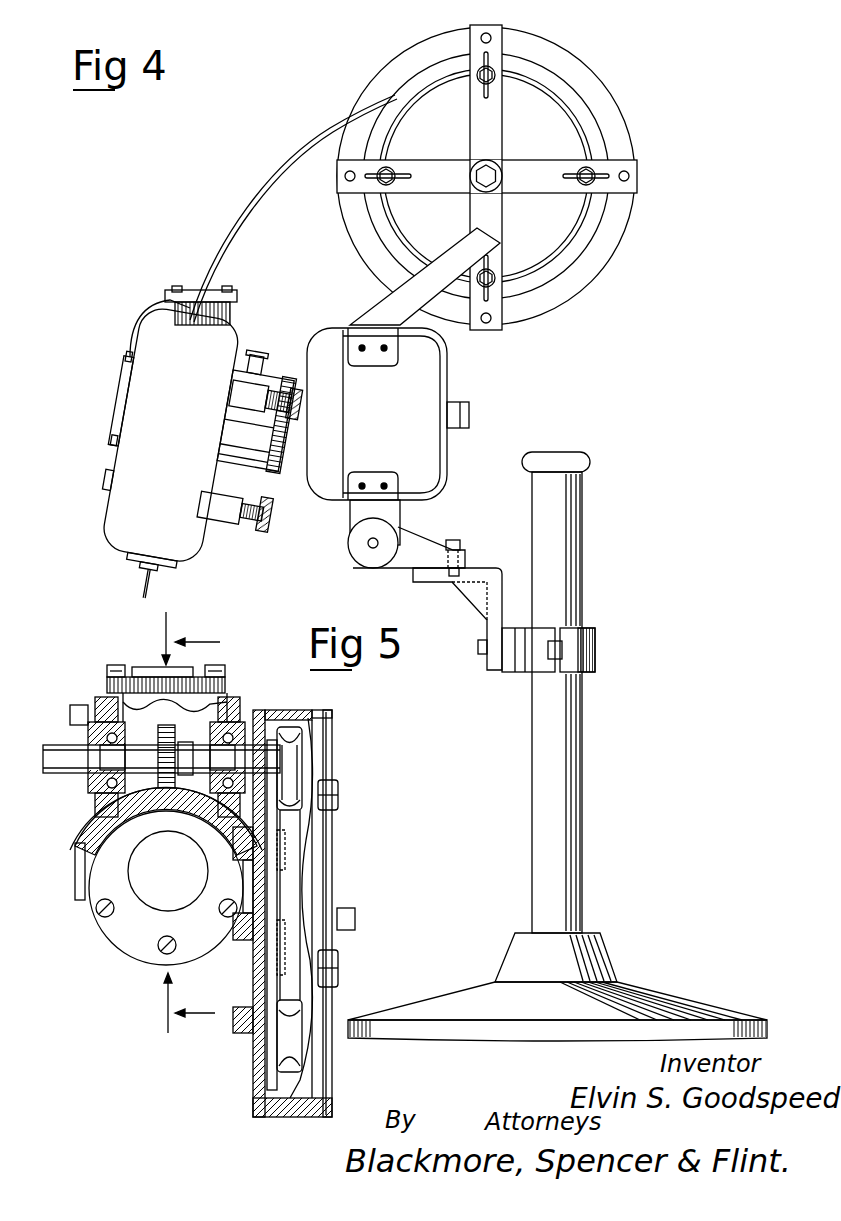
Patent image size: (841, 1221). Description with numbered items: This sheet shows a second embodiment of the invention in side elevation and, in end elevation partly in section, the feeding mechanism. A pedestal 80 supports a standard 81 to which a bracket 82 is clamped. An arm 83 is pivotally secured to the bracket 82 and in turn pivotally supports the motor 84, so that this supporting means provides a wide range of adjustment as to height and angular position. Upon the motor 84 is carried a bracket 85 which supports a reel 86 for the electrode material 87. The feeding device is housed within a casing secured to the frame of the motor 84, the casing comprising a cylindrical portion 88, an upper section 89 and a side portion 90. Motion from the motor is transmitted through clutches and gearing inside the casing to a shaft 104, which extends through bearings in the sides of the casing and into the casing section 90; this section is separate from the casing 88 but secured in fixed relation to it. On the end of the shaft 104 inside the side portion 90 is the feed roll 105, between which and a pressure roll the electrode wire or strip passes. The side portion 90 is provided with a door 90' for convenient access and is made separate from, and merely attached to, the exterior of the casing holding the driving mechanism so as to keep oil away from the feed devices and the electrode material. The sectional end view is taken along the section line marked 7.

In FIG. 5, the section line 7- 7 is at (202, 822).
In FIG. 4, the pedestal 80 is at (648, 992).
In FIG. 4, the standard 81 is at (575, 845).
In FIG. 4, the bracket 82 is at (492, 573).
In FIG. 4, the arm 83 is at (415, 547).
In FIG. 4, the motor 84 is at (448, 458).
In FIG. 4, the bracket 85 is at (382, 305).
In FIG. 4, the reel 86 is at (637, 177).
In FIG. 4, the electrode material 87 is at (313, 138).
In FIG. 4, the cylindrical portion 88 is at (272, 362).
In FIG. 4, the upper section 89 is at (232, 318).
In FIG. 5, the upper section 89 is at (110, 694).
In FIG. 5, the side portion 90 is at (272, 913).
In FIG. 4, the door 90' is at (147, 453).
In FIG. 5, the door 90' is at (356, 913).
In FIG. 5, the shaft 104 is at (75, 748).
In FIG. 5, the feed roll 105 is at (302, 737).